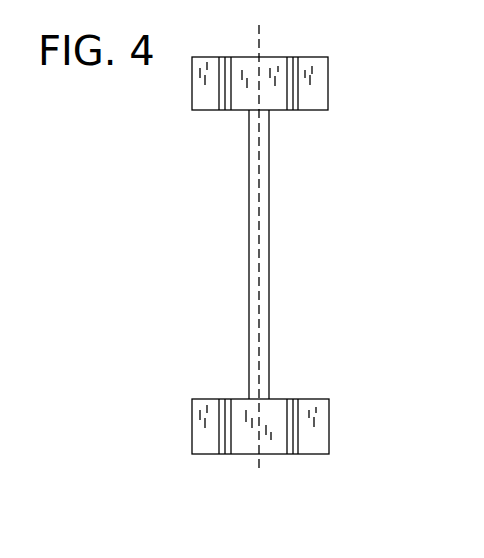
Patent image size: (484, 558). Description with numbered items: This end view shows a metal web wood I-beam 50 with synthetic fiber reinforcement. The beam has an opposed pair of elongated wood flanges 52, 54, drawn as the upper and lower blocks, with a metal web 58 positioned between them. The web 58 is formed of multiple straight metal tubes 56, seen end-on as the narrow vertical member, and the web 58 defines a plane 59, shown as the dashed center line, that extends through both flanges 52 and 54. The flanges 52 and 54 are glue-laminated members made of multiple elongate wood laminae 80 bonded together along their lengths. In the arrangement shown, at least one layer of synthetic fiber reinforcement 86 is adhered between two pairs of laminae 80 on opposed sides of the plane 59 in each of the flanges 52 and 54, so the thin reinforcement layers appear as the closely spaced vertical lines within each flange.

The metal web wood I-beam 50 is at (314, 114).
The wood flange 52 is at (336, 415).
The wood flange 54 is at (332, 114).
The metal tube 56 is at (249, 250).
The tubular metal web 58 is at (272, 268).
The plane 59 is at (262, 41).
The wood laminae 80 is at (240, 110).
The synthetic fiber reinforcement 86 is at (221, 55).